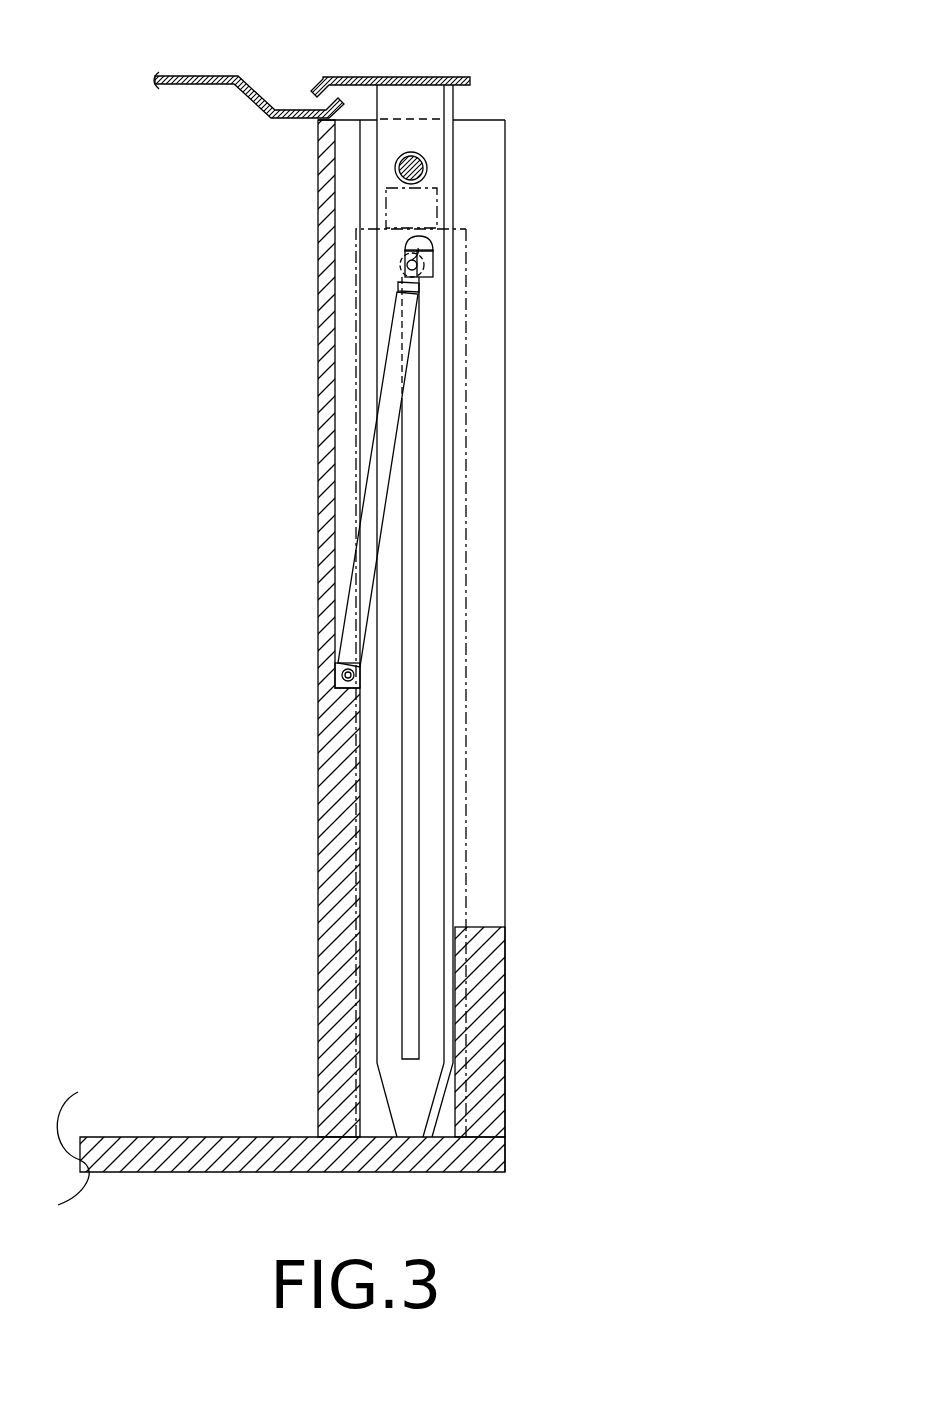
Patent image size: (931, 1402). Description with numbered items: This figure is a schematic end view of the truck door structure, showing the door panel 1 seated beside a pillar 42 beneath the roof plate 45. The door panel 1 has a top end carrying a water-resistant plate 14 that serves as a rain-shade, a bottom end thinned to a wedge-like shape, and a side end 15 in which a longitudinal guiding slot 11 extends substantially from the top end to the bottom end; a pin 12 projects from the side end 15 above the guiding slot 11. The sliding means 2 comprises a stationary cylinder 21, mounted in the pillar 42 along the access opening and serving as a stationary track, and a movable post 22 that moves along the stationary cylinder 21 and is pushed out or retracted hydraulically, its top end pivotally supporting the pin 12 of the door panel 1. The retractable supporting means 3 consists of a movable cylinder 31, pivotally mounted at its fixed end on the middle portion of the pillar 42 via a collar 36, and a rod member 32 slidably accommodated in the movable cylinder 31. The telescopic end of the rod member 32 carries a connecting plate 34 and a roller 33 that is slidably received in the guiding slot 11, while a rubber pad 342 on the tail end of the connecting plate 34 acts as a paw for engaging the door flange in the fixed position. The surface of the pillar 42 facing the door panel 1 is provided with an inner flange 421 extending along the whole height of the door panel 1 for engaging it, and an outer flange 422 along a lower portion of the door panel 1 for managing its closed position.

The door panel 1 is at (455, 335).
The guiding slot 11 is at (412, 700).
The pin 12 is at (428, 167).
The water-resistant plate 14 is at (373, 77).
The side end 15 is at (437, 412).
The sliding means 2 is at (465, 461).
The stationary cylinder 21 is at (465, 533).
The movable post 22 is at (397, 216).
The retractable supporting means 3 is at (313, 479).
The movable cylinder 31 is at (390, 386).
The rod member 32 is at (400, 285).
The roller 33 is at (437, 255).
The connecting plate 34 is at (440, 270).
The rubber pad 342 is at (420, 240).
The collar 36 is at (343, 673).
The pillar 42 is at (504, 606).
The inner flange 421 is at (325, 556).
The outer flange 422 is at (482, 1013).
The roof plate 45 is at (202, 75).